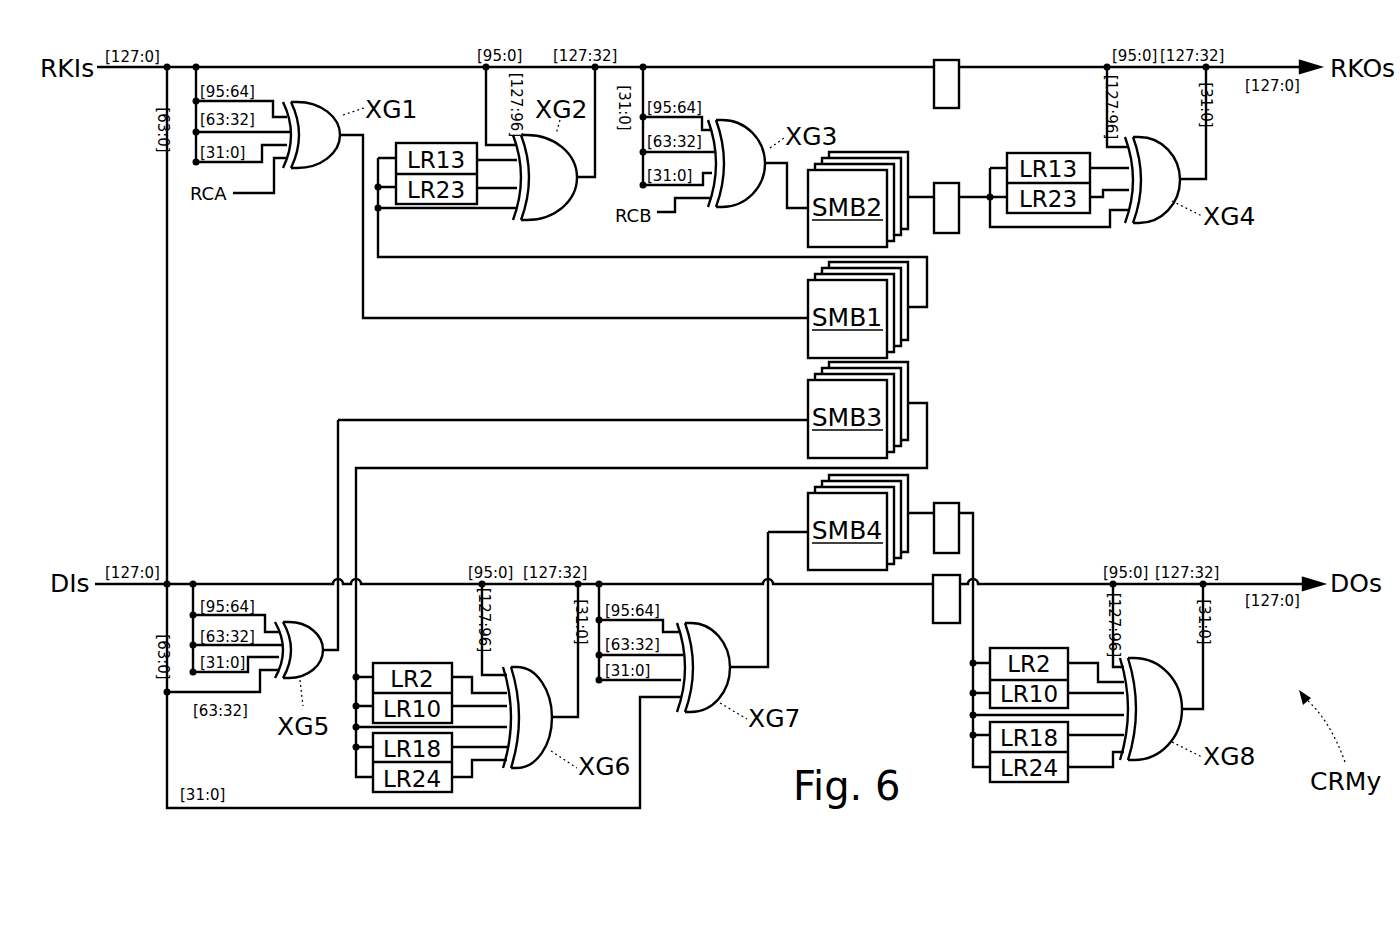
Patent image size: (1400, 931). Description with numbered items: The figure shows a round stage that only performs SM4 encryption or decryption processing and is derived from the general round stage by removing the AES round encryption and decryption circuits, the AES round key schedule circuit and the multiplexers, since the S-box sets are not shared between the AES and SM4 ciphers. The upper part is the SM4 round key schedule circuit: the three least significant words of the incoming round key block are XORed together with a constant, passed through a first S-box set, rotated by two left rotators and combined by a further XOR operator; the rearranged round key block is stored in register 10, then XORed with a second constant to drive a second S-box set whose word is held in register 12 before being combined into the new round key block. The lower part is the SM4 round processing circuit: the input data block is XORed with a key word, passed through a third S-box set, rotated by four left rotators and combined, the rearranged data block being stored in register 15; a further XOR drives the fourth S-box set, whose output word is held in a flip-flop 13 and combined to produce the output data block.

The register 10 is at (963, 58).
The register 12 is at (948, 181).
The flip-flop on SMB4 output path 13 is at (955, 501).
The register 15 is at (950, 626).